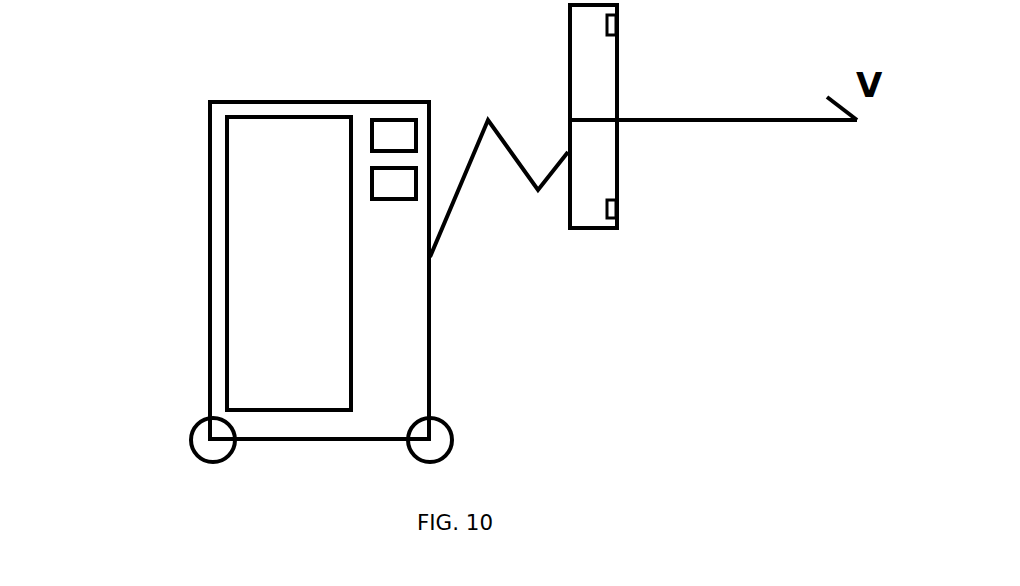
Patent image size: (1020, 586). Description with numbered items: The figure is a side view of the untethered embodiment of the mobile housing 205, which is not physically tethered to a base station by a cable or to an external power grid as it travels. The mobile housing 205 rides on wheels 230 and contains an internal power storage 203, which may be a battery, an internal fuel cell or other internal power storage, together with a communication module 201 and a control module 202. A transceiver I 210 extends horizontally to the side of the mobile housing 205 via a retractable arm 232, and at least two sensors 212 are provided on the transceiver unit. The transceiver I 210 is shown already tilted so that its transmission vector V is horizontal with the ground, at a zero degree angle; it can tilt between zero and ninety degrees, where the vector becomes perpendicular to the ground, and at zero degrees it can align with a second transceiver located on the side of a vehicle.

The mobile housing 205 is at (222, 98).
The internal power storage 203 is at (285, 267).
The communication module 201 is at (388, 133).
The control module 202 is at (403, 183).
The wheels 230 is at (190, 435).
The retractable arm 232 is at (476, 142).
The transceiver I 210 is at (593, 225).
The sensors 212 is at (622, 25).